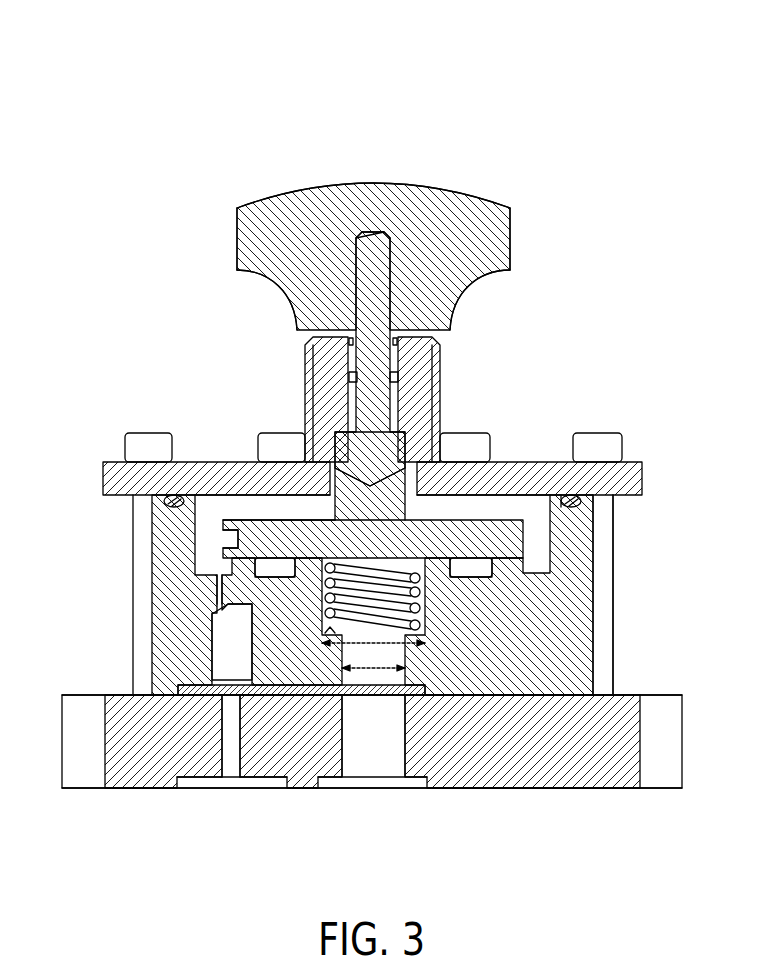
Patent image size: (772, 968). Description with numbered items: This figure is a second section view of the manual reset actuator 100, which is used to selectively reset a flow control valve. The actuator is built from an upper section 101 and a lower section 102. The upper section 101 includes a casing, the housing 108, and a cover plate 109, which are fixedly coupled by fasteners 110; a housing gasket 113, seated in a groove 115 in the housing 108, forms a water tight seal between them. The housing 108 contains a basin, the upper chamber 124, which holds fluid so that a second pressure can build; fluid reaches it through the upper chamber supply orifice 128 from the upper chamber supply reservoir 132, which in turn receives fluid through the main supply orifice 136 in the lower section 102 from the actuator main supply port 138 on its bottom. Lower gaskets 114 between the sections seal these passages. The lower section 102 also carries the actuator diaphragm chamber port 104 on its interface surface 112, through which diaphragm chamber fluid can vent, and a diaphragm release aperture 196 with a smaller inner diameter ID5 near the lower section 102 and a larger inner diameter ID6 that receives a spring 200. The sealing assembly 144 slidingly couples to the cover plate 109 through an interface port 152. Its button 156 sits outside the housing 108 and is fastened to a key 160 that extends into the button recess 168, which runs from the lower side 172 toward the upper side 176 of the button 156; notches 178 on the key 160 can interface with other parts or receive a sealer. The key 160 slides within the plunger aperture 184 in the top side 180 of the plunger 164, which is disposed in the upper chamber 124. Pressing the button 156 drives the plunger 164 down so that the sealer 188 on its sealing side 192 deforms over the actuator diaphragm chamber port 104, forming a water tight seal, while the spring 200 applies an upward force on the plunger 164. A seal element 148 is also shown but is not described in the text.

The manual reset actuator 100 is at (120, 58).
The upper section 101 is at (628, 578).
The lower section 102 is at (689, 744).
The actuator diaphragm chamber port 104 is at (392, 790).
The housing 108 is at (612, 620).
The cover plate 109 is at (640, 470).
The fasteners 110 is at (455, 433).
The interface surface 112 is at (572, 790).
The housing gasket 113 is at (583, 500).
The lower gaskets 114 is at (178, 690).
The groove 115 is at (562, 498).
The upper chamber 124 is at (253, 496).
The upper chamber supply orifice 128 is at (217, 590).
The upper chamber supply reservoir 132 is at (222, 620).
The main supply orifice 136 is at (225, 733).
The actuator main supply port 138 is at (236, 790).
The sealing assembly 144 is at (519, 239).
The seal 148 is at (165, 500).
The interface port 152 is at (303, 306).
The button 156 is at (305, 210).
The key 160 is at (385, 265).
The plunger 164 is at (415, 510).
The button recess 168 is at (356, 247).
The lower side 172 is at (450, 340).
The upper side 176 is at (272, 200).
The notches 178 is at (398, 375).
The top side 180 is at (327, 400).
The plunger aperture 184 is at (332, 445).
The sealer 188 is at (226, 518).
The sealing side 192 is at (226, 546).
The diaphragm release aperture 196 is at (340, 650).
The spring 200 is at (330, 600).
The smaller inner diameter ID5 is at (370, 670).
The larger inner diameter ID6 is at (400, 660).